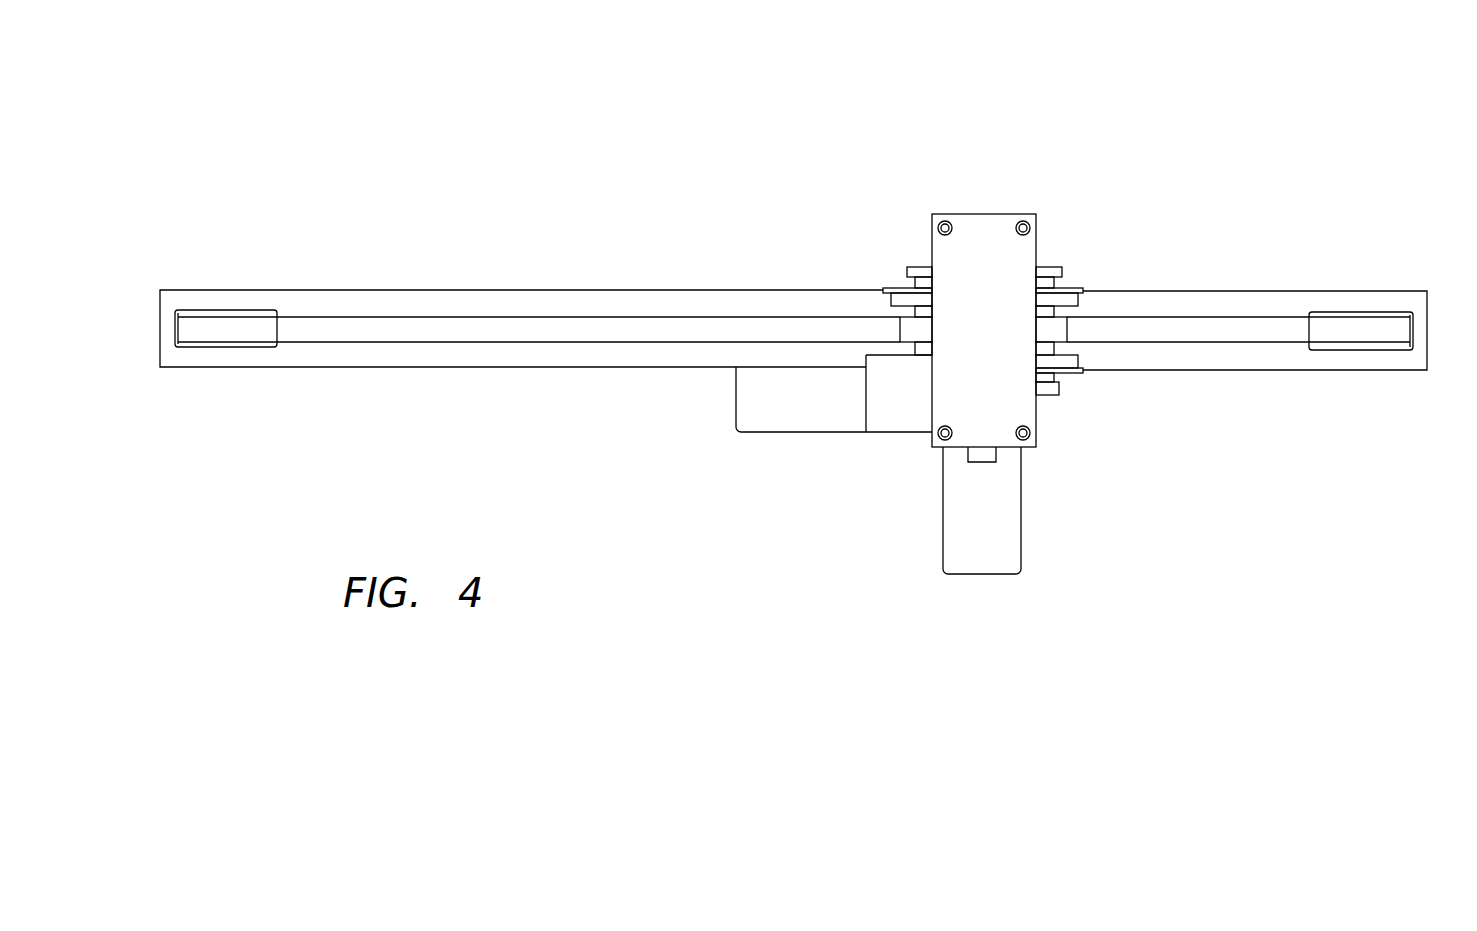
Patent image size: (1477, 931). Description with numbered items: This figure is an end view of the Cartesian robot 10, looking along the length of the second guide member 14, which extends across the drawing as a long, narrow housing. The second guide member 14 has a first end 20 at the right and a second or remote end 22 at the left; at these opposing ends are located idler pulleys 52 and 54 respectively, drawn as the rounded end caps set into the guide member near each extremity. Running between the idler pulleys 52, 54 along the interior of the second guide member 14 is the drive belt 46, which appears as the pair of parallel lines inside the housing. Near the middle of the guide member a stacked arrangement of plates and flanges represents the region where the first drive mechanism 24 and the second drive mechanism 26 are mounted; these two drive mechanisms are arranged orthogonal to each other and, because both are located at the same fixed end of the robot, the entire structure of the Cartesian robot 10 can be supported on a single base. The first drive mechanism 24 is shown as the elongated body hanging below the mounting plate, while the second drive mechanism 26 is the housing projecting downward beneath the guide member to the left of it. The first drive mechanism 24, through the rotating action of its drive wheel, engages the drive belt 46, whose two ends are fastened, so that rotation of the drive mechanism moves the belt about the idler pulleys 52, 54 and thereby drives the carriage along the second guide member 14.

The Cartesian robot 10 is at (783, 130).
The second guide member 14 is at (797, 264).
The first end 20 is at (1427, 307).
The second or remote end 22 is at (157, 308).
The first drive mechanism 24 is at (957, 535).
The second drive mechanism 26 is at (807, 425).
The drive belt 46 is at (348, 327).
The idler pulley 52 is at (1340, 325).
The idler pulley 54 is at (222, 323).